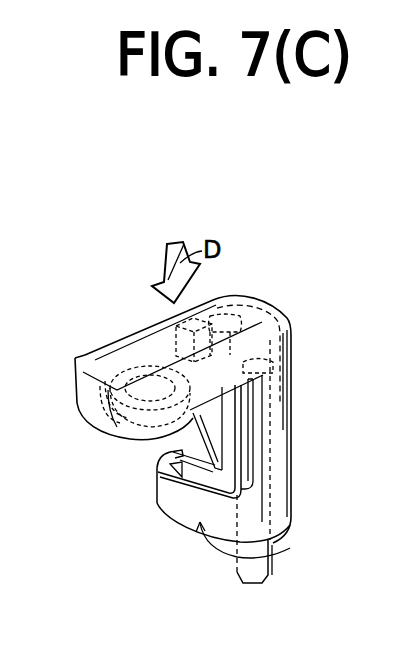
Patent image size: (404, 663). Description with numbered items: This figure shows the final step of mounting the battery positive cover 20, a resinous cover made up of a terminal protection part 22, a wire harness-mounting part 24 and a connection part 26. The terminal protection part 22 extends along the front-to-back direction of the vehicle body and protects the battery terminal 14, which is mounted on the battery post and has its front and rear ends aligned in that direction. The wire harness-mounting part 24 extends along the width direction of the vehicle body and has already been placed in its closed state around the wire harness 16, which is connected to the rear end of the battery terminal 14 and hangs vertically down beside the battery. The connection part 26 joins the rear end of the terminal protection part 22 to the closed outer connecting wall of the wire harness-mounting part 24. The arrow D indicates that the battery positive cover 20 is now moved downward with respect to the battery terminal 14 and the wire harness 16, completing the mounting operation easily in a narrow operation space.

The battery terminal 14 is at (114, 441).
The wire harness 16 is at (228, 585).
The battery positive cover 20 is at (336, 308).
The terminal protection part 22 is at (232, 329).
The wire harness-mounting part 24 is at (292, 545).
The connection part 26 is at (270, 413).